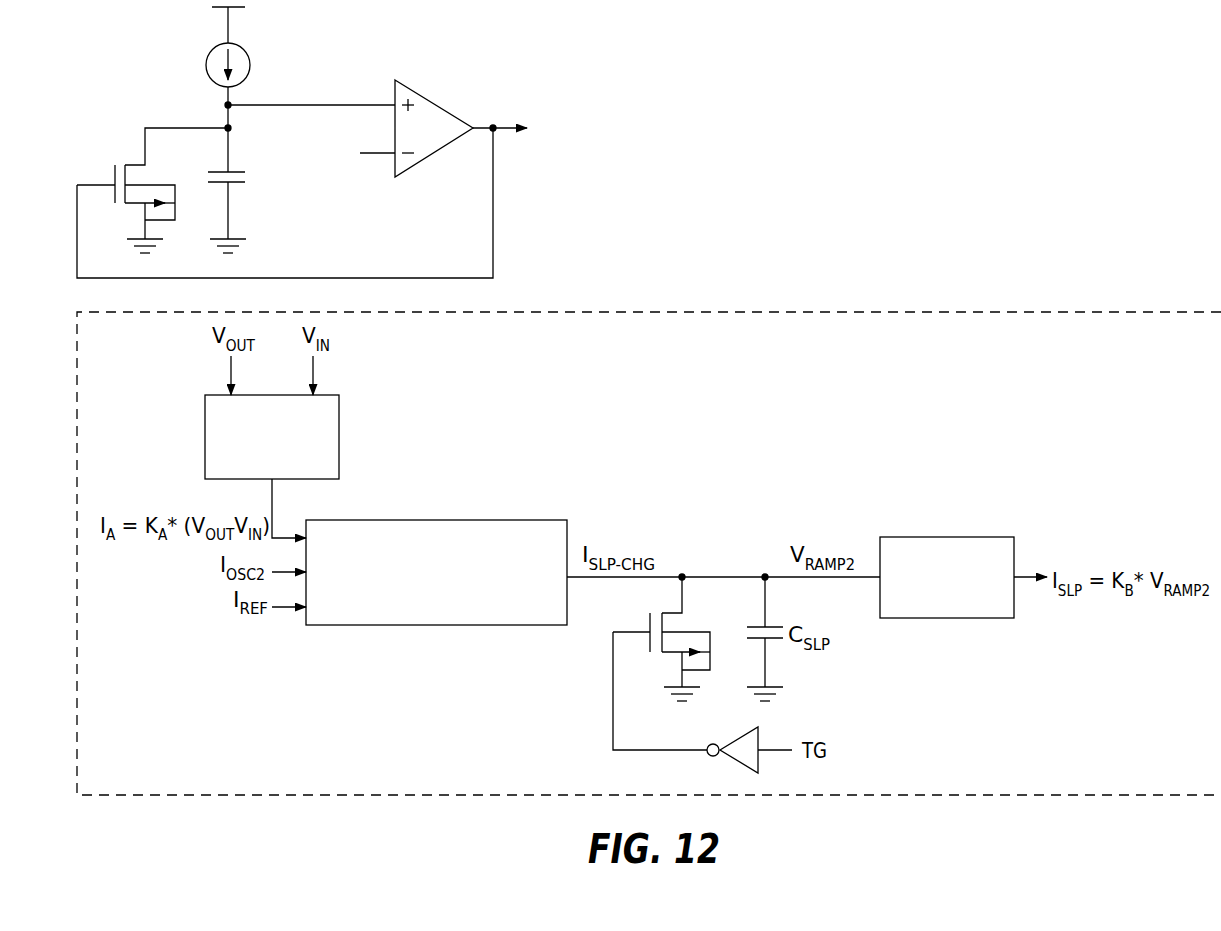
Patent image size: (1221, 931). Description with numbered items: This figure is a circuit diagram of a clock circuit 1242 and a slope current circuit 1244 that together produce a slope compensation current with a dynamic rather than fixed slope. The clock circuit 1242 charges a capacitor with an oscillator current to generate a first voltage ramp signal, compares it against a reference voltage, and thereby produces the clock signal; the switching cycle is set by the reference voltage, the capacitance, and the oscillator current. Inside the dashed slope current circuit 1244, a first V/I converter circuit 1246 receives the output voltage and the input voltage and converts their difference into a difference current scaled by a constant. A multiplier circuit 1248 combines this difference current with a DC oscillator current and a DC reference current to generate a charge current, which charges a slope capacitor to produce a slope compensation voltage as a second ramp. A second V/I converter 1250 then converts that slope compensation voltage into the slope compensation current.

The clock circuit 1242 is at (452, 47).
The slope current circuit 1244 is at (652, 312).
The first V/I converter circuit 1246 is at (339, 438).
The multiplier circuit 1248 is at (437, 520).
The second V/I converter 1250 is at (947, 537).